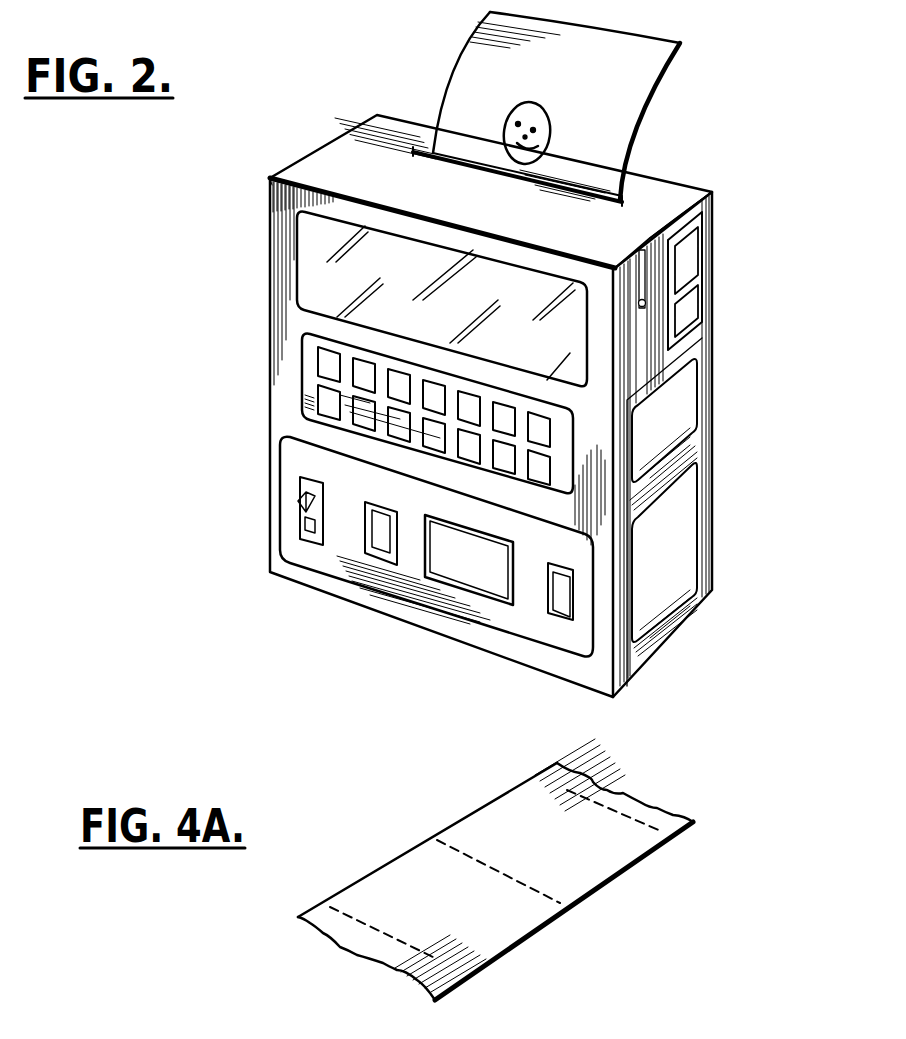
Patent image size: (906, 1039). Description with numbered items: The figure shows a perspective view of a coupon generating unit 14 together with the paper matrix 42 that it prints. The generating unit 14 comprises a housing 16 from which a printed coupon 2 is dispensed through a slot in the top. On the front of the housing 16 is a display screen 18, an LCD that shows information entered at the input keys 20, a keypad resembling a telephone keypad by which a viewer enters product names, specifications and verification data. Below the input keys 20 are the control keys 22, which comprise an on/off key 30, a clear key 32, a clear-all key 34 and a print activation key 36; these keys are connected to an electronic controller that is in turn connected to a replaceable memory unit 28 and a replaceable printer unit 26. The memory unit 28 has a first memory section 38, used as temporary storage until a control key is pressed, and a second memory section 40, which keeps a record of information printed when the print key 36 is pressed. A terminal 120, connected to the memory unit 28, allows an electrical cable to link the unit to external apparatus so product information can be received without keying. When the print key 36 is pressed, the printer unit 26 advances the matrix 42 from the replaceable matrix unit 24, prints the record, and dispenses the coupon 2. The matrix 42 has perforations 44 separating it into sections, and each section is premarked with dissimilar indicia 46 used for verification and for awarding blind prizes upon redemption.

In FIG. 2, the coupon 2 is at (657, 83).
In FIG. 2, the generating unit 14 is at (717, 357).
In FIG. 2, the housing 16 is at (270, 185).
In FIG. 2, the display screen 18 is at (308, 263).
In FIG. 2, the input keys 20 is at (313, 377).
In FIG. 2, the control keys 22 is at (290, 459).
In FIG. 2, the replaceable matrix unit 24 is at (673, 540).
In FIG. 2, the replaceable printer unit 26 is at (667, 410).
In FIG. 2, the replaceable memory unit 28 is at (703, 267).
In FIG. 2, the on/off key 30 is at (300, 510).
In FIG. 2, the clear key 32 is at (380, 553).
In FIG. 2, the clear-all key 34 is at (473, 587).
In FIG. 2, the print activation key 36 is at (563, 620).
In FIG. 2, the first memory section 38 is at (687, 313).
In FIG. 2, the second memory section 40 is at (682, 250).
In FIG. 2, the terminal 120 is at (660, 232).
In FIG. 4A, the matrix 42 is at (652, 857).
In FIG. 4A, the perforations 44 is at (323, 903).
In FIG. 4A, the indicia 46 is at (577, 893).